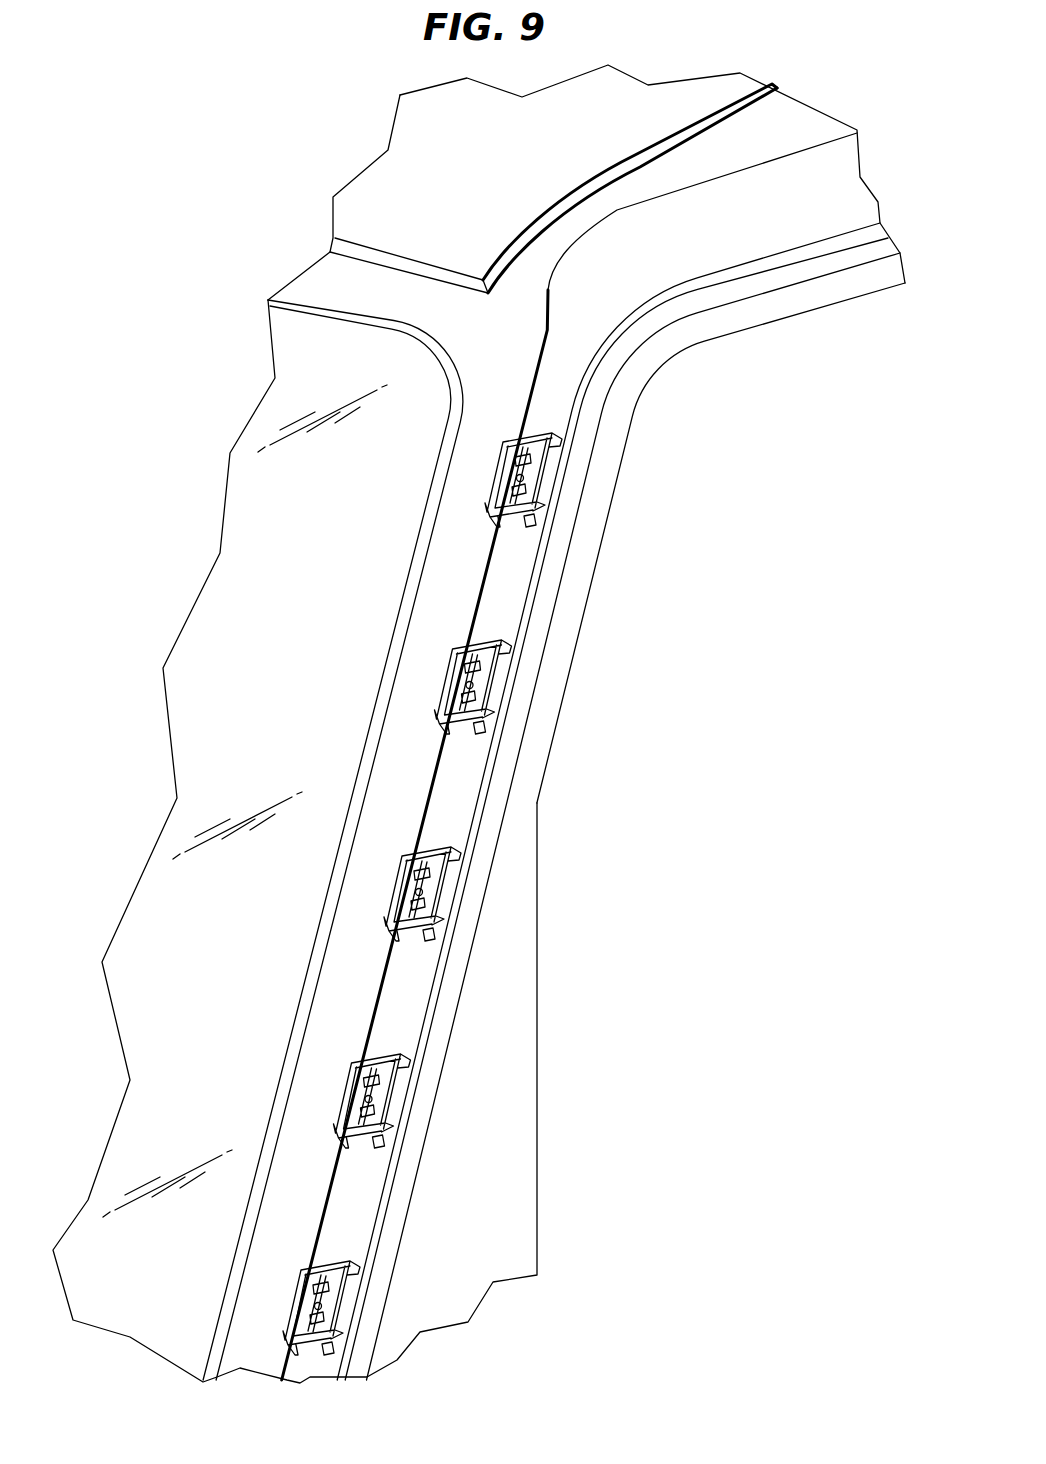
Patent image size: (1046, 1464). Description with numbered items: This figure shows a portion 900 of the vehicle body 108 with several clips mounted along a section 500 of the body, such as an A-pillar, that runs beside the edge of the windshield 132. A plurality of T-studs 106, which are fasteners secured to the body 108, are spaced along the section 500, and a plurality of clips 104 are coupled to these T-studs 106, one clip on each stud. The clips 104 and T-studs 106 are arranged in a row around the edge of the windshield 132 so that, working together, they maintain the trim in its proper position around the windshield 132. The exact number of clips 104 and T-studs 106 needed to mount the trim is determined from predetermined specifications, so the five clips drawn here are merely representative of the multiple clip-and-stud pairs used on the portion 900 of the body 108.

The portion of vehicle body 900 is at (182, 119).
The windshield 132 is at (311, 570).
The body 108 is at (520, 561).
The section 500 is at (477, 802).
The clip 104 is at (545, 467).
The T-stud 106 is at (519, 471).